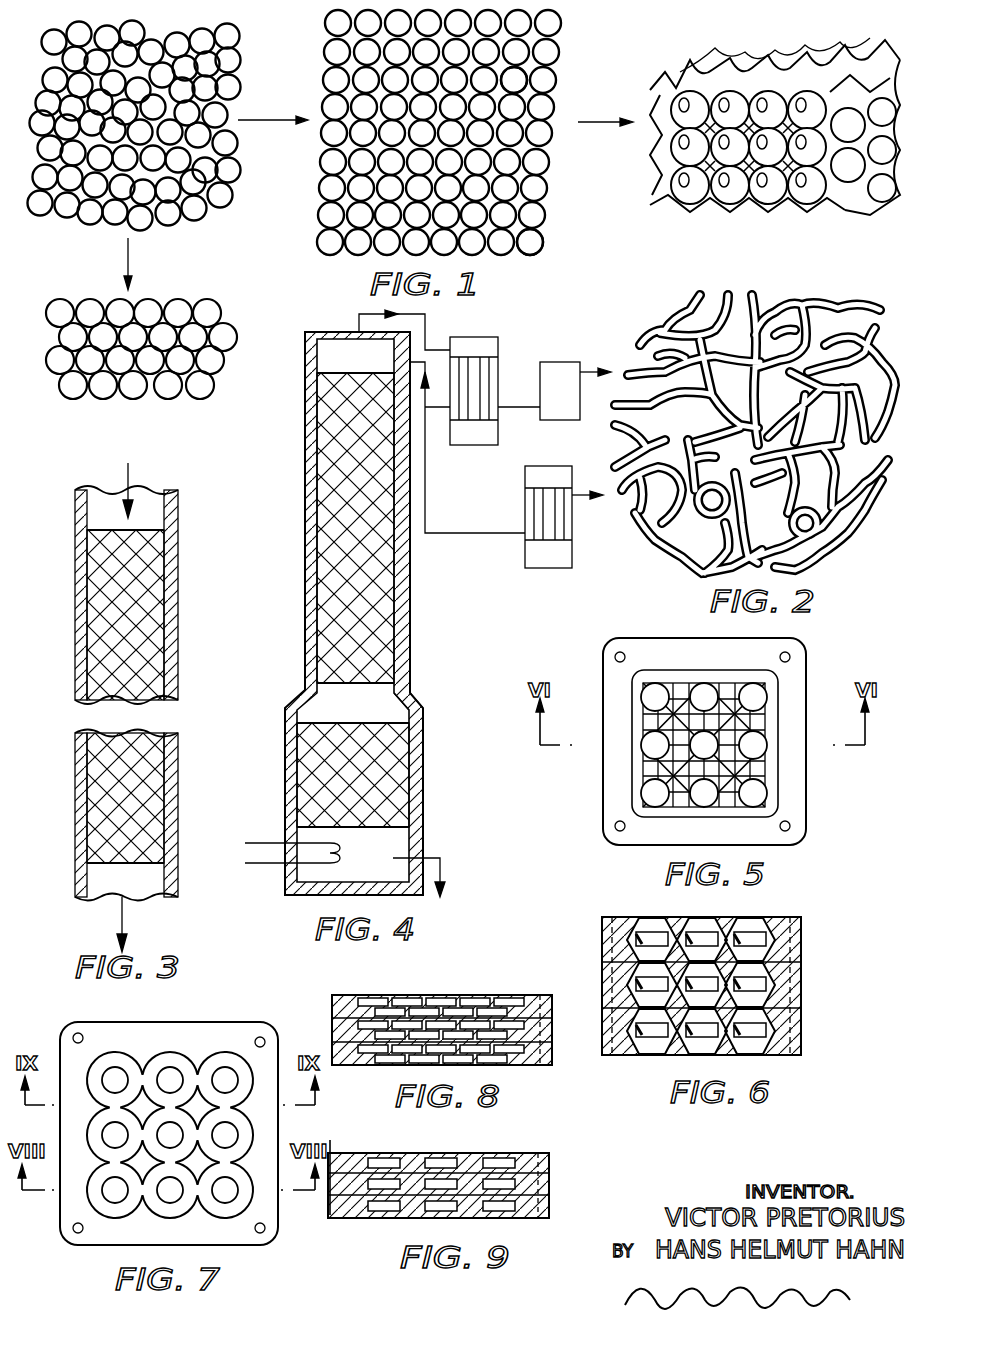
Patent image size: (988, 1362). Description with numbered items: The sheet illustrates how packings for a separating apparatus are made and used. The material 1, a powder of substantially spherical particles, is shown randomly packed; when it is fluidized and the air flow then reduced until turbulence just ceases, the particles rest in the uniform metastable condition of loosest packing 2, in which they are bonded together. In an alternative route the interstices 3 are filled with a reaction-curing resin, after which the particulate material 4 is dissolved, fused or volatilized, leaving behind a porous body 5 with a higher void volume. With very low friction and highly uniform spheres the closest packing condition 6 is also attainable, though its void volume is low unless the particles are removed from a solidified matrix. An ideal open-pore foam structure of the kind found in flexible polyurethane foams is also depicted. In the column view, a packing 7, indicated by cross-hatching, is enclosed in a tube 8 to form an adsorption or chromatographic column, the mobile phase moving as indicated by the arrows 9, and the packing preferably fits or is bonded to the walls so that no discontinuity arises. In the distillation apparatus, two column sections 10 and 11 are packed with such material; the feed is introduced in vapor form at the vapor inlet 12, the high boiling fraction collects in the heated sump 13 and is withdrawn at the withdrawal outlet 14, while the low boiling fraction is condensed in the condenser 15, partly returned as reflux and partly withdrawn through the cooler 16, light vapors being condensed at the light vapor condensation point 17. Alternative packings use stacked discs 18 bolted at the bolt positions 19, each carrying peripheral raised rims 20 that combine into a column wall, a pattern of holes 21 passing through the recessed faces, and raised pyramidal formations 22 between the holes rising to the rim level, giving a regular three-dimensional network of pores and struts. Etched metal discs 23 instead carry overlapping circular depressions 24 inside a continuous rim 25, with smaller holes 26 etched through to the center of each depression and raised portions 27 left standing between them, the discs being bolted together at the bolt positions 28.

In FIG. 1, the material 1 is at (258, 184).
In FIG. 1, the loosest packing 2 is at (571, 197).
In FIG. 1, the interstices 3 is at (542, 86).
In FIG. 1, the particulate material 4 is at (533, 246).
In FIG. 1, the porous body 5 is at (773, 254).
In FIG. 1, the closest packing condition 6 is at (246, 392).
In FIG. 3, the packing 7 is at (130, 618).
In FIG. 3, the tube 8 is at (167, 807).
In FIG. 3, the arrows 9 is at (127, 937).
In FIG. 4, the column section 10 is at (385, 776).
In FIG. 4, the column section 11 is at (380, 597).
In FIG. 4, the vapor inlet 12 is at (410, 697).
In FIG. 4, the heated sump 13 is at (393, 836).
In FIG. 4, the withdrawal outlet 14 is at (446, 883).
In FIG. 4, the condenser 15 is at (488, 370).
In FIG. 4, the cooler 16 is at (527, 510).
In FIG. 4, the light vapor condensation point 17 is at (574, 403).
In FIG. 5, the discs 18 is at (793, 795).
In FIG. 6, the discs 18 is at (801, 946).
In FIG. 5, the bolt positions 19 is at (791, 828).
In FIG. 6, the bolt positions 19 is at (790, 1056).
In FIG. 5, the peripheral raised rims 20 is at (605, 714).
In FIG. 6, the peripheral raised rims 20 is at (602, 1057).
In FIG. 5, the holes 21 is at (753, 694).
In FIG. 6, the holes 21 is at (703, 932).
In FIG. 5, the raised pyramidal formations 22 is at (655, 770).
In FIG. 6, the raised pyramidal formations 22 is at (742, 1046).
In FIG. 7, the discs 23 is at (270, 1215).
In FIG. 7, the depressions 24 is at (213, 1060).
In FIG. 9, the depressions 24 is at (438, 1160).
In FIG. 8, the continuous rim 25 is at (553, 1000).
In FIG. 9, the continuous rim 25 is at (550, 1188).
In FIG. 7, the holes 26 is at (222, 1193).
In FIG. 8, the holes 26 is at (386, 1062).
In FIG. 7, the raised portions 27 is at (198, 1168).
In FIG. 8, the raised portions 27 is at (505, 1050).
In FIG. 9, the raised portions 27 is at (420, 1202).
In FIG. 7, the bolt positions 28 is at (262, 1233).
In FIG. 8, the bolt positions 28 is at (543, 997).
In FIG. 9, the bolt positions 28 is at (535, 1222).